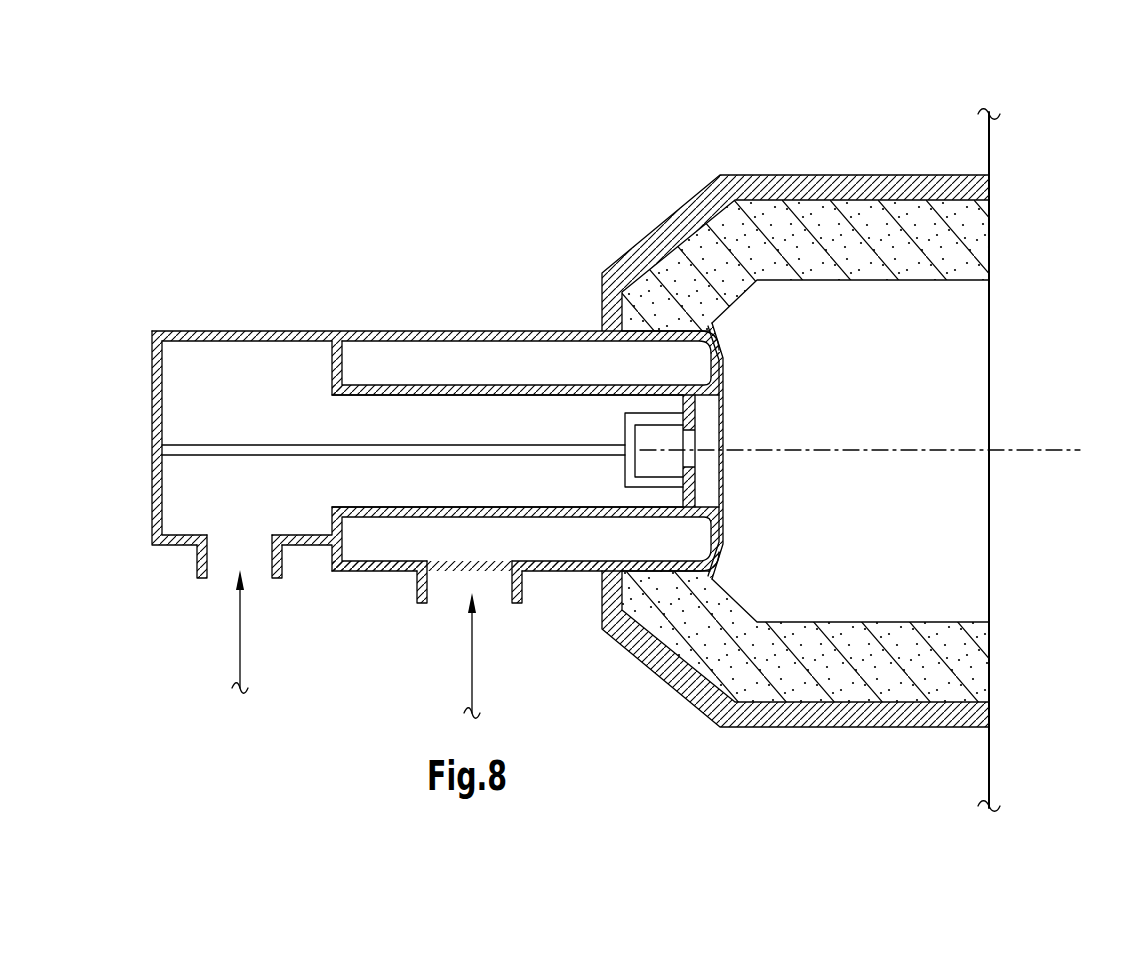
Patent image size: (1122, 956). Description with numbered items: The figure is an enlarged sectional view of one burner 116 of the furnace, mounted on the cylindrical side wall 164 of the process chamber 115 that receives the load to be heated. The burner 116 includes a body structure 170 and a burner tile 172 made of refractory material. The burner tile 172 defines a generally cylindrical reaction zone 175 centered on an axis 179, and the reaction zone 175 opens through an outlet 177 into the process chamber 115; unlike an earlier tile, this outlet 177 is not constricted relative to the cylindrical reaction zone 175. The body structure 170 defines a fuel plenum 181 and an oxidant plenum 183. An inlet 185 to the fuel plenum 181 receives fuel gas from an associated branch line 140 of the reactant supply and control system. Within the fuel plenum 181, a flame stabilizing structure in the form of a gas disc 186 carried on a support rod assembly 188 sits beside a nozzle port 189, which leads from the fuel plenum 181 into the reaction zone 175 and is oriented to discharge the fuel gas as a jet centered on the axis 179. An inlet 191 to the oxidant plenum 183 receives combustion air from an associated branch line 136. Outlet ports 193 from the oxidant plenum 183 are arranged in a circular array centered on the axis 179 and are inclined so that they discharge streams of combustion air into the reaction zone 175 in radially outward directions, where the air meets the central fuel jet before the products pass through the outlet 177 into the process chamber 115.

The process chamber 115 is at (1110, 343).
The burner 116 is at (417, 287).
The branch line 136 is at (473, 672).
The branch line 140 is at (242, 653).
The side wall 164 is at (989, 143).
The body structure 170 is at (225, 330).
The burner tile 172 is at (989, 243).
The reaction zone 175 is at (922, 324).
The outlet 177 is at (973, 378).
The axis 179 is at (1020, 448).
The fuel plenum 181 is at (250, 393).
The oxidant plenum 183 is at (502, 371).
The inlet 185 is at (219, 579).
The gas disc 186 is at (625, 434).
The support rod assembly 188 is at (458, 457).
The nozzle port 189 is at (700, 436).
The inlet 191 is at (447, 606).
The outlet ports 193 is at (727, 352).